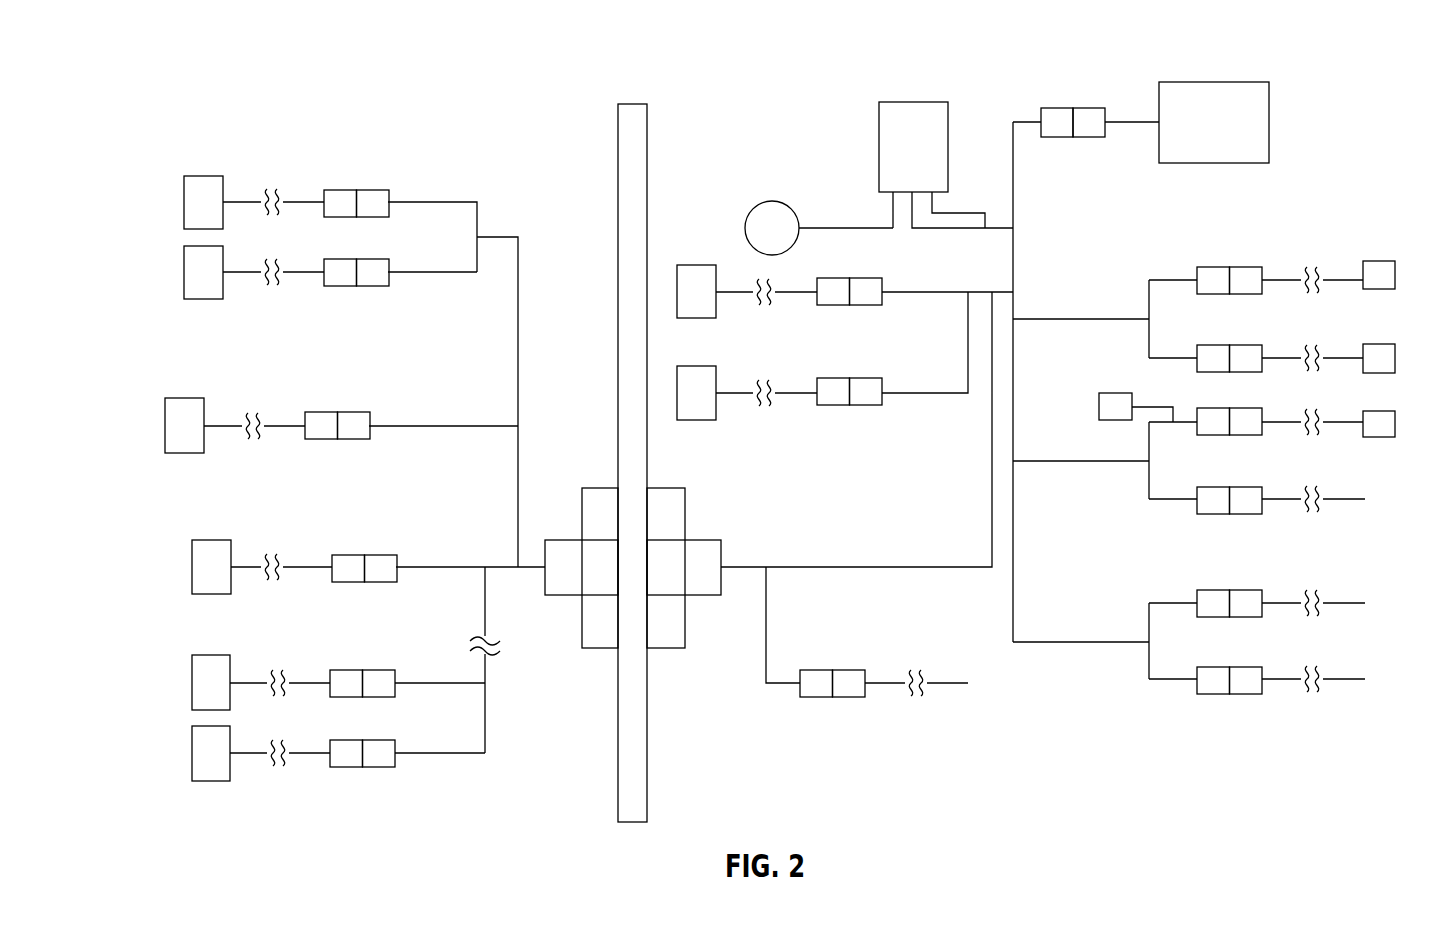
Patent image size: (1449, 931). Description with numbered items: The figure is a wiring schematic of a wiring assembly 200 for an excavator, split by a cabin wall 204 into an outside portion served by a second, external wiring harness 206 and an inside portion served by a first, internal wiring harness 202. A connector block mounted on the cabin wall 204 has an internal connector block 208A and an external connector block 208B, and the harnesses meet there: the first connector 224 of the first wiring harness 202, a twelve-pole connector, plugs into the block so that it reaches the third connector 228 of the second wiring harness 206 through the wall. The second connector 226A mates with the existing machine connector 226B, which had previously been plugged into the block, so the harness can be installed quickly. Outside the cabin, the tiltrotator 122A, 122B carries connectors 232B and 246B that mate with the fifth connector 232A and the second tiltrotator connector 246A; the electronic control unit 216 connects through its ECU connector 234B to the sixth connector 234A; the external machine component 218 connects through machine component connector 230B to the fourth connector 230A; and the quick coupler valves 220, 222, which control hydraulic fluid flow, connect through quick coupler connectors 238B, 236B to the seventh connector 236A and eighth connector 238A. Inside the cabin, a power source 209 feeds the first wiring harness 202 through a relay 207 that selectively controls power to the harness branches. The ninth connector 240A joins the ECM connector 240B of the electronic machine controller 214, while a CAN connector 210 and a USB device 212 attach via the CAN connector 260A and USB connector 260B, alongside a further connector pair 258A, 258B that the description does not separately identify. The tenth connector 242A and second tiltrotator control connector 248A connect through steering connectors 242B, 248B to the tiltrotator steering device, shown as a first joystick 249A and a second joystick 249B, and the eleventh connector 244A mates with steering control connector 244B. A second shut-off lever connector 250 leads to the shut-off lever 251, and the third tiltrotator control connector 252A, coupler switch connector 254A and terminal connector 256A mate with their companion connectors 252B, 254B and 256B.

The wiring assembly 200 is at (197, 58).
The first wiring harness 202 is at (808, 93).
The cabin wall 204 is at (633, 104).
The second wiring harness 206 is at (253, 132).
The relay 207 is at (912, 102).
The internal connector block 208A is at (601, 488).
The external connector block 208B is at (685, 508).
The power source 209 is at (772, 201).
The CAN connector 210 is at (695, 265).
The USB device 212 is at (696, 420).
The electronic machine controller 214 is at (1216, 82).
The electronic control unit 216 is at (165, 426).
The external machine component 218 is at (192, 567).
The quick coupler valve 220 is at (192, 683).
The quick coupler valve 222 is at (192, 753).
The first connector 224 is at (721, 558).
The second connector 226A is at (822, 688).
The existing machine connector 226B is at (852, 688).
The third connector 228 is at (566, 595).
The fourth connector 230A is at (383, 573).
The machine component connector 230B is at (346, 573).
The fifth connector 232A is at (375, 207).
The tiltrotator connector 232B is at (338, 207).
The sixth connector 234A is at (356, 430).
The ECU connector 234B is at (319, 430).
The seventh connector 236A is at (375, 748).
The quick coupler connector 236B is at (348, 748).
The eighth connector 238A is at (381, 688).
The quick coupler connector 238B is at (344, 688).
The ninth connector 240A is at (1055, 116).
The ECM connector 240B is at (1090, 116).
The tenth connector 242A is at (1211, 284).
The steering control connector 242B is at (1243, 284).
The eleventh connector 244A is at (1211, 418).
The steering control connector 244B is at (1243, 418).
The second tiltrotator connector 246A is at (375, 276).
The tiltrotator connector 246B is at (338, 276).
The second tiltrotator control connector 248A is at (1211, 362).
The steering connector 248B is at (1243, 362).
The first joystick 249A is at (1380, 276).
The second joystick 249B is at (1380, 359).
The second shut-off lever connector 250 is at (1115, 393).
The shut-off lever 251 is at (1382, 418).
The third tiltrotator control connector 252A is at (1211, 497).
The connector half 252B is at (1243, 497).
The coupler switch connector 254A is at (1211, 600).
The connector half 254B is at (1243, 600).
The terminal connector 256A is at (1211, 678).
The connector half 256B is at (1243, 678).
The connector half 258A is at (868, 296).
The connector half 258B is at (831, 296).
The CAN connector 260A is at (868, 396).
The USB connector 260B is at (831, 396).
The tiltrotator 122A is at (184, 200).
The tiltrotator 122B is at (184, 270).